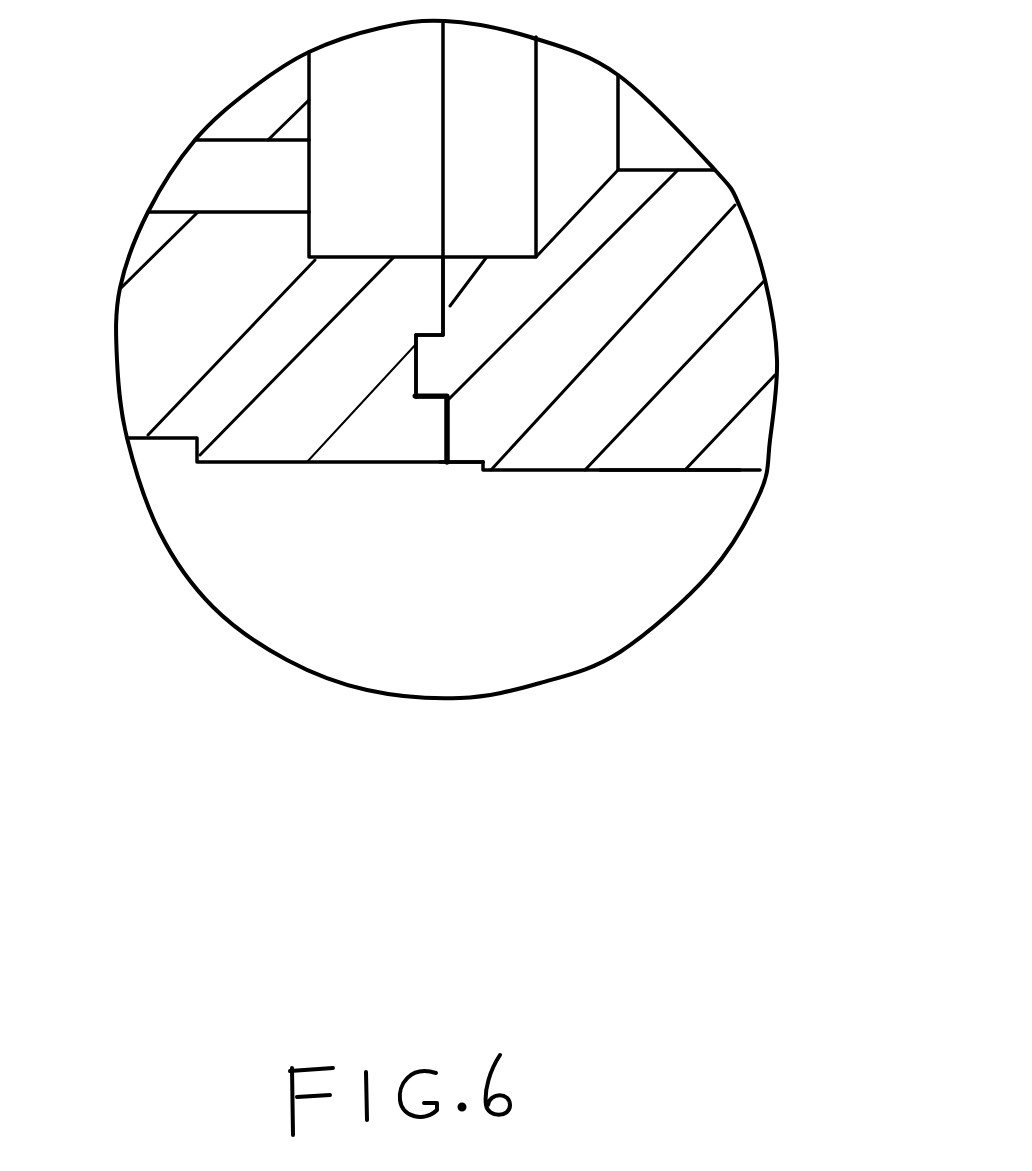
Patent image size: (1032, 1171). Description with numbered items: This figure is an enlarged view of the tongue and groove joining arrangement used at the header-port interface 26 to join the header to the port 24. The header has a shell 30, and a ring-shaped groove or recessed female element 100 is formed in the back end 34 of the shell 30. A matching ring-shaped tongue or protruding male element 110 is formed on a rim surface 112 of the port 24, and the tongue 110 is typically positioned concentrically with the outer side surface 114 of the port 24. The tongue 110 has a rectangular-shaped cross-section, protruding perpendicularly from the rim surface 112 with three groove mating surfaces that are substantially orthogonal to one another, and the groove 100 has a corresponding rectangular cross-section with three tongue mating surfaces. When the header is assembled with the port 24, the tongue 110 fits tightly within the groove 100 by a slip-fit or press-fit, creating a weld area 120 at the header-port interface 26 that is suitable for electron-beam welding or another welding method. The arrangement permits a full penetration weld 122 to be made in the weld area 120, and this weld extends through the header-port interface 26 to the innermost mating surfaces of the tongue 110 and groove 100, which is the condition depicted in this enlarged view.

The port 24 is at (718, 450).
The header-port interface 26 is at (448, 472).
The shell 30 is at (246, 432).
The back end 34 is at (464, 130).
The groove 100 is at (413, 360).
The tongue 110 is at (432, 363).
The rim surface 112 is at (443, 300).
The outer side surface 114 is at (667, 470).
The weld area 120 is at (411, 412).
The full penetration weld 122 is at (433, 418).